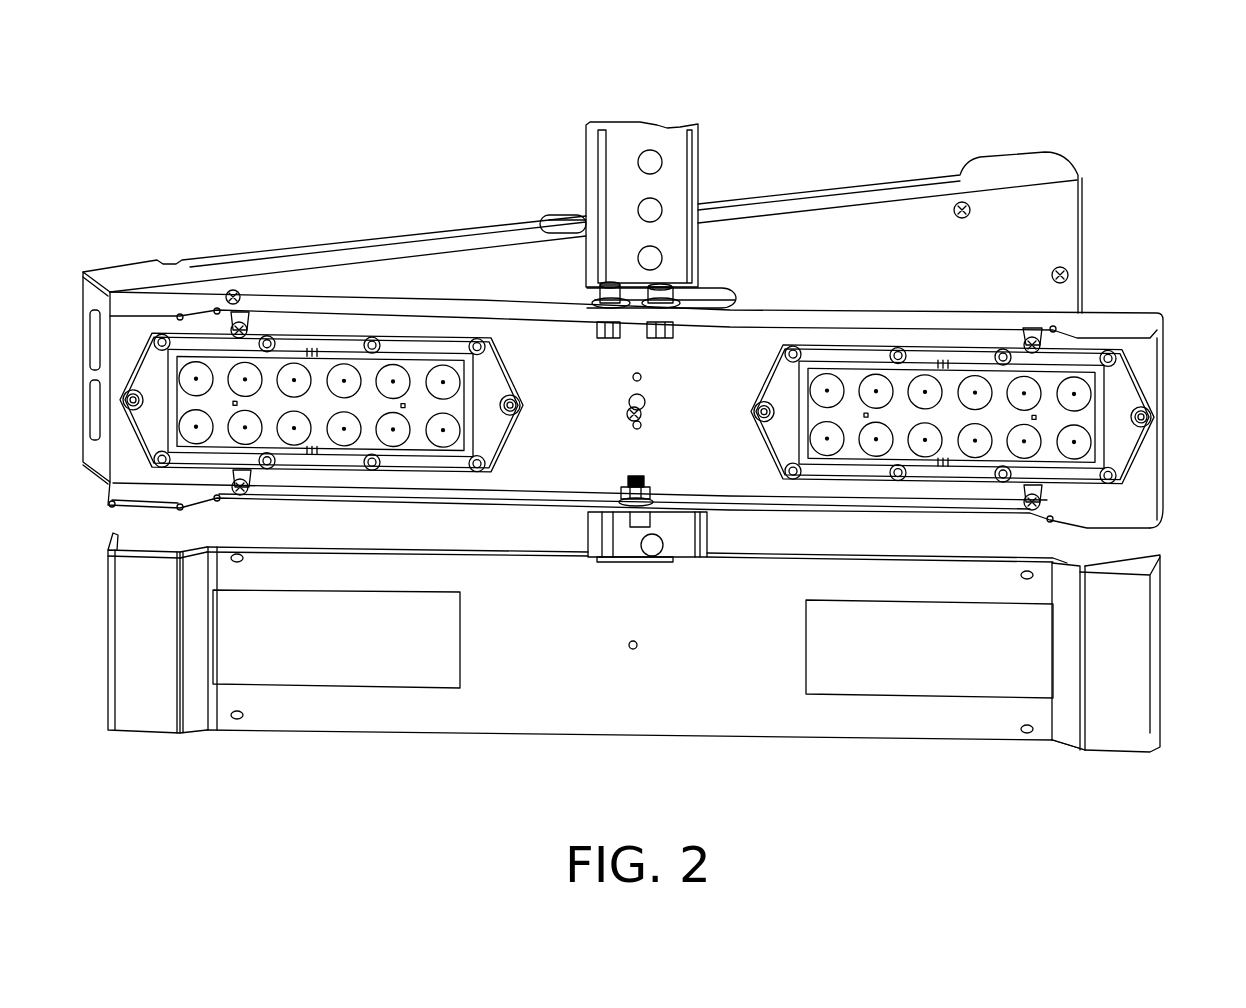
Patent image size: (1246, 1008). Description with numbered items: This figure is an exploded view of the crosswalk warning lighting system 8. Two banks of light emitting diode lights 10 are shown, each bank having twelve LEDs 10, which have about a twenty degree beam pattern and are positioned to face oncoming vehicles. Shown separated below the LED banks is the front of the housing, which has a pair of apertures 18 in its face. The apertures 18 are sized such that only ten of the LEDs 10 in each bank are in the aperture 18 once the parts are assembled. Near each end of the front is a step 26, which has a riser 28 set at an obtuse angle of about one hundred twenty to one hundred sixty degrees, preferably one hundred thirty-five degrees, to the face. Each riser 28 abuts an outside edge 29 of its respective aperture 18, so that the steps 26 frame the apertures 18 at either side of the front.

The crosswalk warning lighting system 8 is at (1084, 103).
The light emitting diode lights 10 is at (365, 377).
The apertures 18 is at (343, 640).
The step 26 is at (137, 697).
The riser 28 is at (203, 597).
The outside edge 29 is at (215, 640).